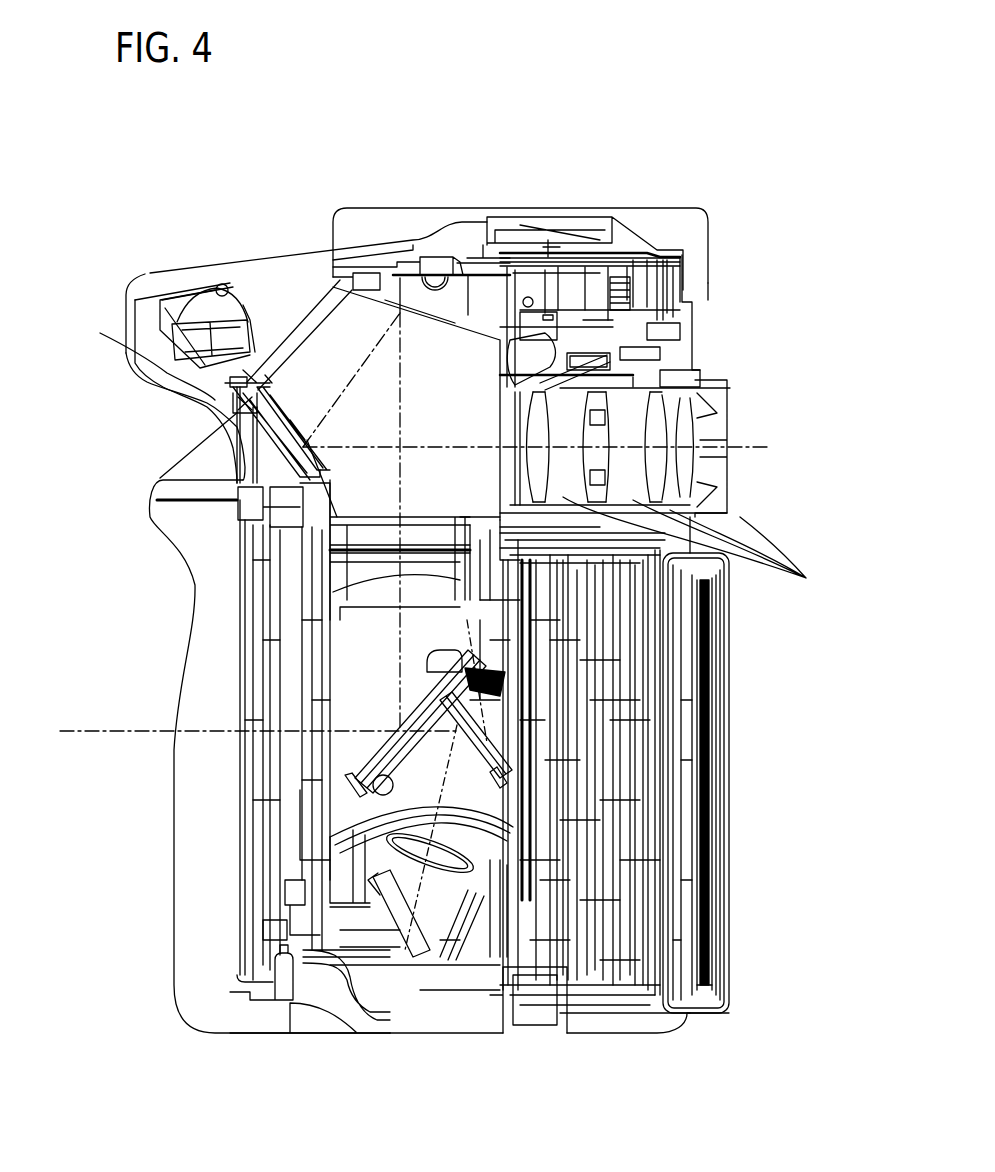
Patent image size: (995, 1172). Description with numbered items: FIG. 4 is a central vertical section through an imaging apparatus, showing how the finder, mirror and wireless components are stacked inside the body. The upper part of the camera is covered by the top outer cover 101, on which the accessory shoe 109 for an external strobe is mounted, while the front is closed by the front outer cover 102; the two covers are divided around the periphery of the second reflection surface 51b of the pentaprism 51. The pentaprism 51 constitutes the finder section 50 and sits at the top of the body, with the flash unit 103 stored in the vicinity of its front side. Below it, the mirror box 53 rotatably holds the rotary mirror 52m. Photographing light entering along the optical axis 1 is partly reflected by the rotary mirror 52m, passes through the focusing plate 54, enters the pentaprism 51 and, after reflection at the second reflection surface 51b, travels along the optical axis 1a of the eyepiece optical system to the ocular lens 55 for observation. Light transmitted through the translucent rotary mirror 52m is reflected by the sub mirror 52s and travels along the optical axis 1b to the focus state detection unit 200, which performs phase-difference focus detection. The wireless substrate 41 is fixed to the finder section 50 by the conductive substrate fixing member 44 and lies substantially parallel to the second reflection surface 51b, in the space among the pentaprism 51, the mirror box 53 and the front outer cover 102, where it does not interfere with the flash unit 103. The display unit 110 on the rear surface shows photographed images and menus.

The optical axis 1 is at (130, 729).
The optical axis of the eyepiece optical system 1a is at (737, 447).
The optical axis 1b is at (460, 780).
The wireless substrate 41 is at (255, 375).
The substrate fixing member 44 is at (247, 307).
The finder section 50 is at (520, 207).
The pentaprism 51 is at (290, 432).
The second reflection surface 51b is at (247, 390).
The rotary mirror 52m is at (360, 740).
The sub mirror 52s is at (505, 765).
The mirror box 53 is at (253, 476).
The focusing plate 54 is at (455, 570).
The ocular lens 55 is at (806, 580).
The top outer cover 101 is at (440, 237).
The front outer cover 102 is at (222, 424).
The flash unit 103 is at (203, 283).
The accessory shoe 109 is at (590, 218).
The display unit 110 is at (727, 748).
The focus state detection unit 200 is at (437, 980).